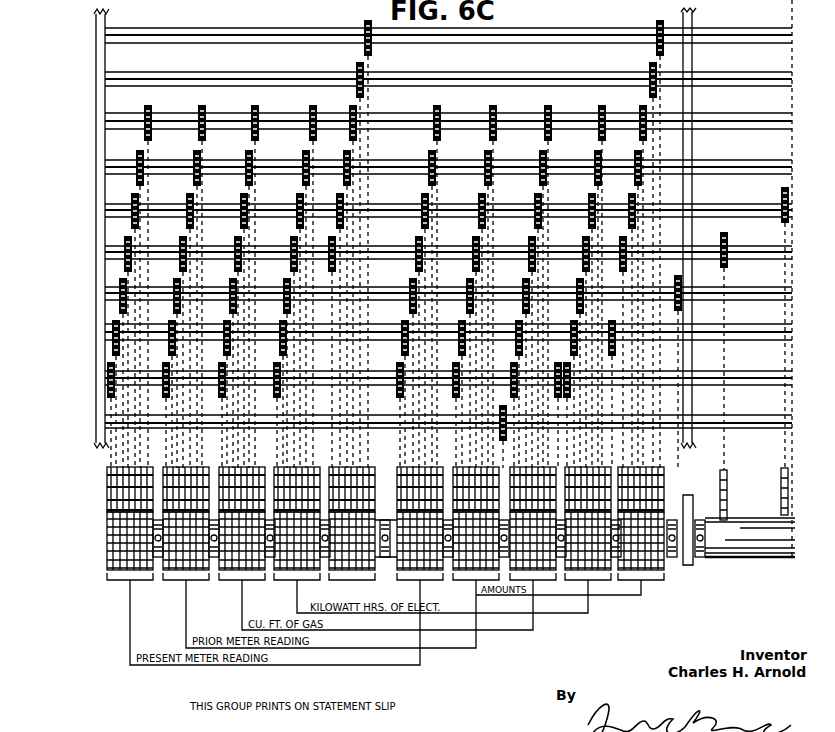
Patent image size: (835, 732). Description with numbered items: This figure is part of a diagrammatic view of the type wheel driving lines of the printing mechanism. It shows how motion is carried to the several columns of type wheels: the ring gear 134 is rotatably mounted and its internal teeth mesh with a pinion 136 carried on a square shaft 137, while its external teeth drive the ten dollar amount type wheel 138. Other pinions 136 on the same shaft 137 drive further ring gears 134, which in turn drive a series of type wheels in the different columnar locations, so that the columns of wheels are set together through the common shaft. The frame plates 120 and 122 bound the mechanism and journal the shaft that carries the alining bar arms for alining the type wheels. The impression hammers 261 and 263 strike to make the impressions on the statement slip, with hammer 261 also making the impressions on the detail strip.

The plate 120 is at (107, 20).
The plate 122 is at (694, 20).
The impression hammer 263 is at (322, 49).
The impression hammer 261 is at (513, 49).
The pinion 136 is at (258, 150).
The square shaft 137 is at (713, 160).
The ring gear 134 is at (345, 466).
The ten dollar amount type wheel 138 is at (345, 580).